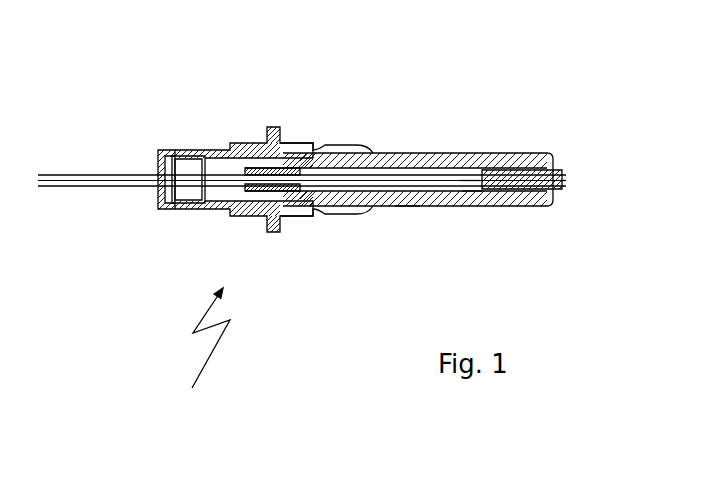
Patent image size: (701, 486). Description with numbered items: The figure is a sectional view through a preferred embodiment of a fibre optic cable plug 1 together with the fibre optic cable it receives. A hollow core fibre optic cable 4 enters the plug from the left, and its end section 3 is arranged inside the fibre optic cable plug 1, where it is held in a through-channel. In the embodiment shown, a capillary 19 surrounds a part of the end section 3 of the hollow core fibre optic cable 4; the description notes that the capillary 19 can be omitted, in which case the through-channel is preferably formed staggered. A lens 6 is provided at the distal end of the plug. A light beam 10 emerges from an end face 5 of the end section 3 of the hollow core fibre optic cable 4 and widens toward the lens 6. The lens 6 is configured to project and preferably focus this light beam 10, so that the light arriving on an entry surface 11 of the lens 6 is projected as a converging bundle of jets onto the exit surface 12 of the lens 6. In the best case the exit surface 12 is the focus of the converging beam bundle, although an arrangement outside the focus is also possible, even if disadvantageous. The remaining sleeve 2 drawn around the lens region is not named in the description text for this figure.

The fibre optic cable plug 1 is at (204, 352).
The tube 2 is at (437, 152).
The end section 3 is at (377, 150).
The hollow core fibre optic cable 4 is at (85, 174).
The end face 5 is at (408, 206).
The lens 6 is at (525, 168).
The light beam 10 is at (470, 182).
The entry surface 11 is at (472, 192).
The exit surface 12 is at (580, 178).
The capillary 19 is at (264, 124).